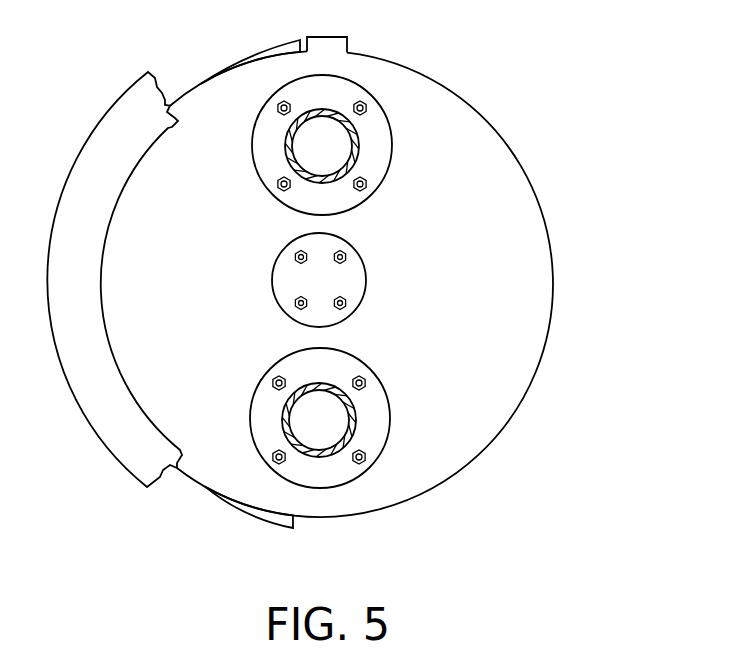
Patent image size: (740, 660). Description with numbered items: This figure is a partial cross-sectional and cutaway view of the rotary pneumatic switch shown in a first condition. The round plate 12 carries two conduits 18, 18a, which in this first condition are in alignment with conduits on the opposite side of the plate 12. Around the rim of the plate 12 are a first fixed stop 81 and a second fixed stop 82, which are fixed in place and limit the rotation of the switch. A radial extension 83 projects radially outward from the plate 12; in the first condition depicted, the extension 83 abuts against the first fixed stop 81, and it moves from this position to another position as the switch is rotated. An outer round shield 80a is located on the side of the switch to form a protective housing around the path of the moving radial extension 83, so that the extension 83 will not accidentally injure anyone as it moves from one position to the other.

The plate 12 is at (535, 270).
The conduit 18 is at (360, 147).
The conduit 18a is at (356, 422).
The shield 80a is at (95, 432).
The first fixed stop 81 is at (272, 47).
The second fixed stop 82 is at (261, 518).
The radial extension 83 is at (347, 35).